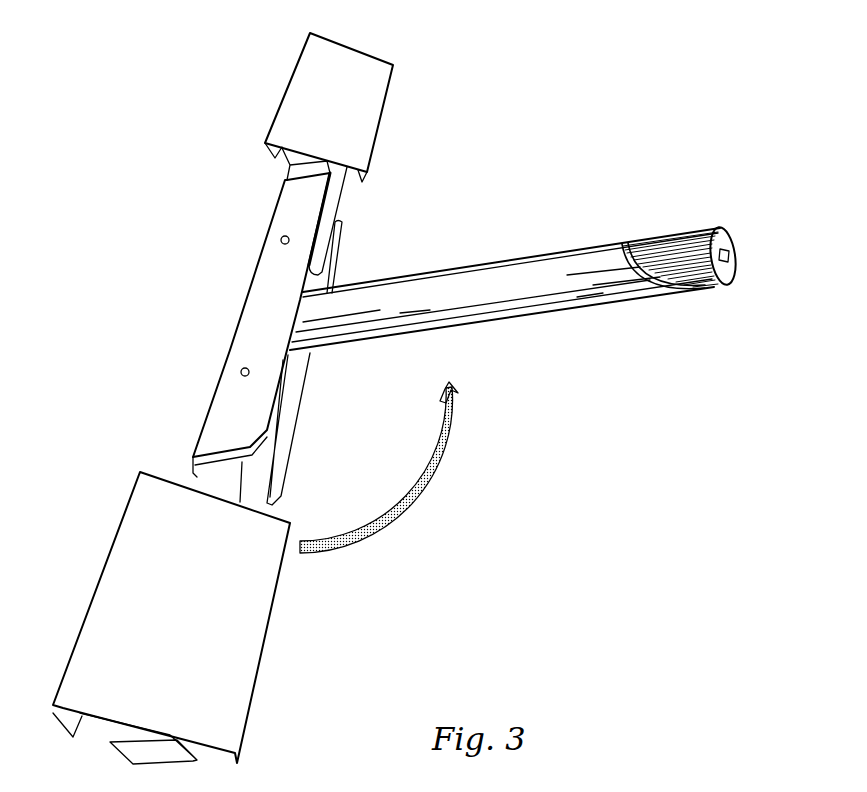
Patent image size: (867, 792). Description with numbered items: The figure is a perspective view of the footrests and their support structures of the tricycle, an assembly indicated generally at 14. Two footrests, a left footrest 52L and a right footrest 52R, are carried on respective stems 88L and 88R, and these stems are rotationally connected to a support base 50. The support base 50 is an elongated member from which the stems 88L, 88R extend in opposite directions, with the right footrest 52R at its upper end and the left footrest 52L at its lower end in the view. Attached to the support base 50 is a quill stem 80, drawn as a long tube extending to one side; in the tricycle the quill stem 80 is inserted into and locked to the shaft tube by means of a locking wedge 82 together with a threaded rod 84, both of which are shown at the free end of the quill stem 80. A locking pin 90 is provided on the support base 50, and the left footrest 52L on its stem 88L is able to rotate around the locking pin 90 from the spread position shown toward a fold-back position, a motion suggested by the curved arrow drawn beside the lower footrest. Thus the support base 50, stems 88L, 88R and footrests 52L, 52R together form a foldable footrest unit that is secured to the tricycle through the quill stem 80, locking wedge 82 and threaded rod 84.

The locking mechanism 14 is at (154, 127).
The support base 50 is at (247, 290).
The right footrest 52R is at (277, 96).
The left footrest 52L is at (118, 525).
The quill stem 80 is at (505, 248).
The locking wedge 82 is at (660, 238).
The threaded rod 84 is at (730, 247).
The right stem 88R is at (340, 210).
The left stem 88L is at (297, 460).
The locking pin 90 is at (240, 371).